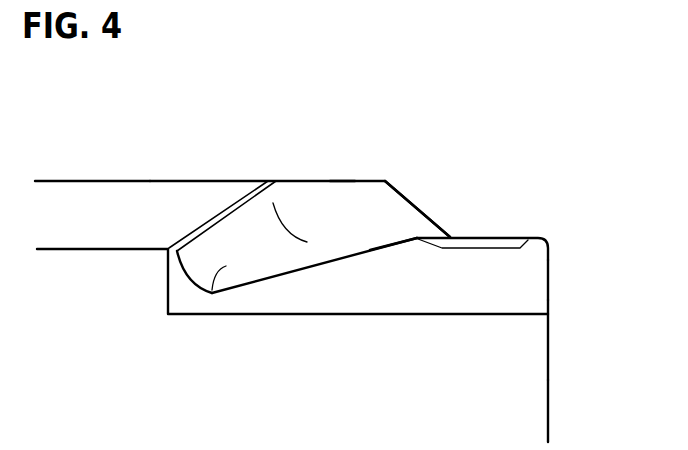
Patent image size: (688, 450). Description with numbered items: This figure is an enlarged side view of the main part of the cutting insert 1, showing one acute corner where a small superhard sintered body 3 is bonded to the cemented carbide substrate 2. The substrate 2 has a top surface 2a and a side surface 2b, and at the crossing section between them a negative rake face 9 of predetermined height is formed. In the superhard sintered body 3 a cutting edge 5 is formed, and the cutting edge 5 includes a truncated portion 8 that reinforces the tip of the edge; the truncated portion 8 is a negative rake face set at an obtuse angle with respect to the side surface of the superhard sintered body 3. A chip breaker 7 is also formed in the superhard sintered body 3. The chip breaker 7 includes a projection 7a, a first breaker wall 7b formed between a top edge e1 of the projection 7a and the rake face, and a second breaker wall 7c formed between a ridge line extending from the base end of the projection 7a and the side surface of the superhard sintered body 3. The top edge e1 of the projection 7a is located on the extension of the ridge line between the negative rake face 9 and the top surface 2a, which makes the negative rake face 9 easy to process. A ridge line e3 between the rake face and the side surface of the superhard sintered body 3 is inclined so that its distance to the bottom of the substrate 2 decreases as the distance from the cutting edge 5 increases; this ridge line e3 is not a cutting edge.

The cutting insert 1 is at (393, 165).
The substrate 2 is at (522, 412).
The top surface 2a is at (147, 180).
The side surface 2b is at (522, 357).
The superhard sintered body 3 is at (553, 279).
The cutting edge 5 is at (521, 247).
The chip breaker 7 is at (323, 217).
The projection 7a is at (418, 207).
The first breaker wall 7b is at (383, 263).
The second breaker wall 7c is at (212, 291).
The truncated portion 8 is at (482, 237).
The negative rake face 9 is at (78, 185).
The top edge e1 is at (342, 178).
The ridge line e3 is at (340, 267).